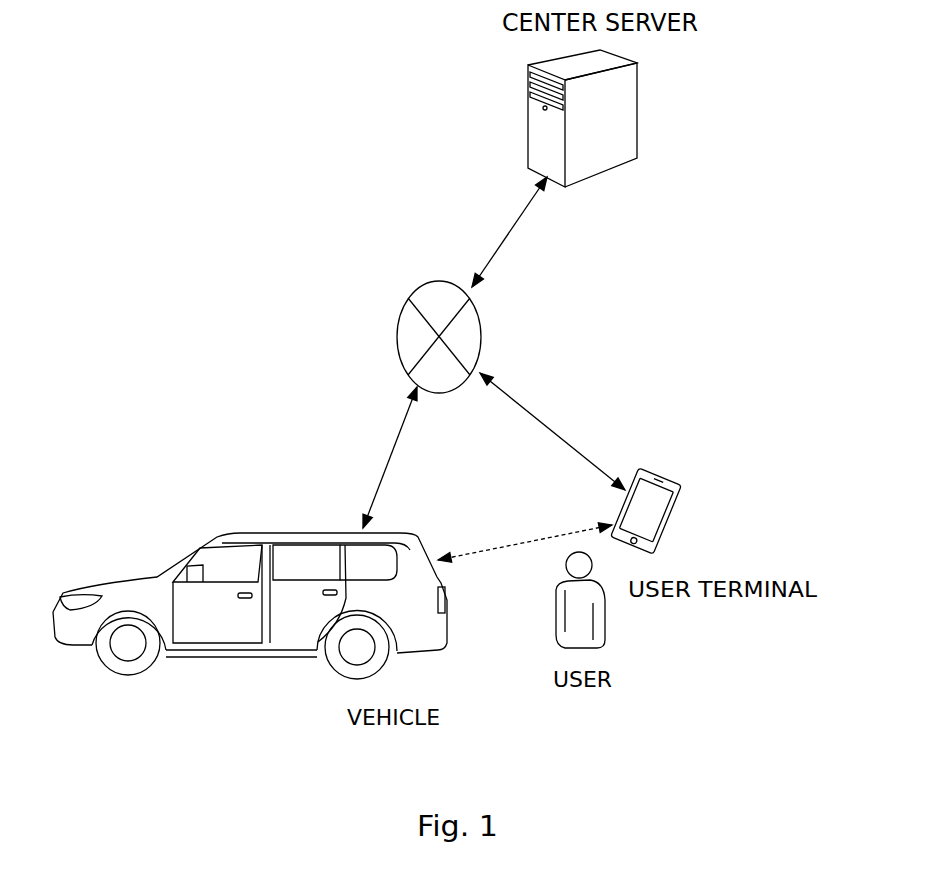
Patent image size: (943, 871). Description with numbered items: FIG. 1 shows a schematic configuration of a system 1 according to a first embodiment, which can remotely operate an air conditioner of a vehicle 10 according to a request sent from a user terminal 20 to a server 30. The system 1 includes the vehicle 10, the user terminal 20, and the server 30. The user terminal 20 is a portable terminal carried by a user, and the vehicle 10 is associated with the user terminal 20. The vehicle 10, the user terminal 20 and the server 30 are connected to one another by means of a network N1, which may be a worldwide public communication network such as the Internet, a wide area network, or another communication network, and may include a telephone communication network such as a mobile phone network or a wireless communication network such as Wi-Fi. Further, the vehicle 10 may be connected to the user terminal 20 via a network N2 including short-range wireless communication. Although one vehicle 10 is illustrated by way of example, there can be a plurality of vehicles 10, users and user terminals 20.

The vehicle management system 1 is at (583, 282).
The vehicle 10 is at (258, 660).
The user terminal 20 is at (640, 465).
The center server 30 is at (538, 125).
The network N1 is at (458, 385).
The network N2 is at (520, 542).